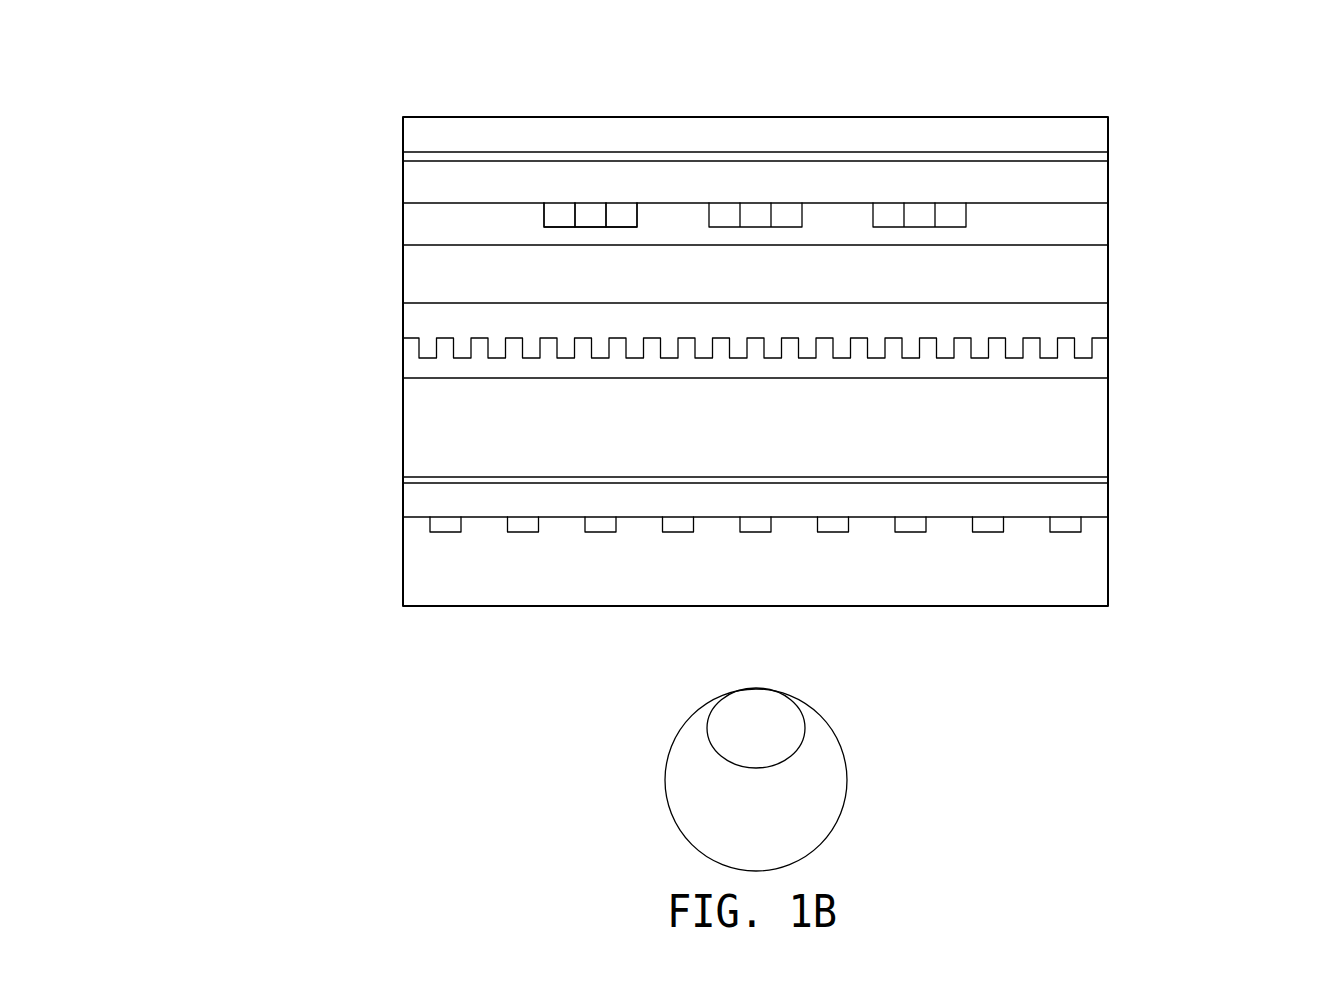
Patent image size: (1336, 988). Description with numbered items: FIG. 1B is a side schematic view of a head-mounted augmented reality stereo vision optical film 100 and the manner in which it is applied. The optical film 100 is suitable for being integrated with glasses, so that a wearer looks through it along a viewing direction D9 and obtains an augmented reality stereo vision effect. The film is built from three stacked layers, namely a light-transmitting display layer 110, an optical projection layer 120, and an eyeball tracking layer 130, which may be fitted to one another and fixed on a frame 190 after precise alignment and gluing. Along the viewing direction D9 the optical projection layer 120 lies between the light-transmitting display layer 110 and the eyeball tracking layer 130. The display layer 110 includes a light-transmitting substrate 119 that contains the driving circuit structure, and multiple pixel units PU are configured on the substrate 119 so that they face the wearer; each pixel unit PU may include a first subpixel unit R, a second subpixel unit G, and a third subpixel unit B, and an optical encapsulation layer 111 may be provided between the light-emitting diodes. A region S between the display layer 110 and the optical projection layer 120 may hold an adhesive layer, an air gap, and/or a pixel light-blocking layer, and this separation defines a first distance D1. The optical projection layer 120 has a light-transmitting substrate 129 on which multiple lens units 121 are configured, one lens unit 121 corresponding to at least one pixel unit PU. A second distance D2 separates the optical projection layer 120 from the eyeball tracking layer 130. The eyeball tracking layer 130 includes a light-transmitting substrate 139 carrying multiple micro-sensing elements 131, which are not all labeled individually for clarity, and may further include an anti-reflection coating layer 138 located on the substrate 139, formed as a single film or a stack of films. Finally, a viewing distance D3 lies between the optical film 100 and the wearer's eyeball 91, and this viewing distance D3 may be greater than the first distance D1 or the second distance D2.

The head-mounted augmented reality stereo vision optical film 100 is at (808, 349).
The frame 190 is at (403, 137).
The light-transmitting display layer 110 is at (697, 128).
The substrate 119 is at (1007, 181).
The optical encapsulation layer 111 is at (1045, 220).
The pixel unit PU is at (747, 119).
The first subpixel unit R is at (560, 215).
The second subpixel unit G is at (590, 215).
The third subpixel unit B is at (620, 215).
The region S is at (433, 273).
The first distance D1 is at (1053, 246).
The optical projection layer 120 is at (758, 355).
The substrate 129 is at (1083, 330).
The lens unit 121 is at (1085, 367).
The second distance D2 is at (602, 380).
The eyeball tracking layer 130 is at (758, 565).
The anti-reflection coating layer 138 is at (1055, 480).
The substrate 139 is at (1060, 499).
The micro-sensing element 131 is at (912, 535).
The viewing distance D3 is at (756, 608).
The eyeball 91 is at (846, 752).
The viewing direction D9 is at (185, 548).